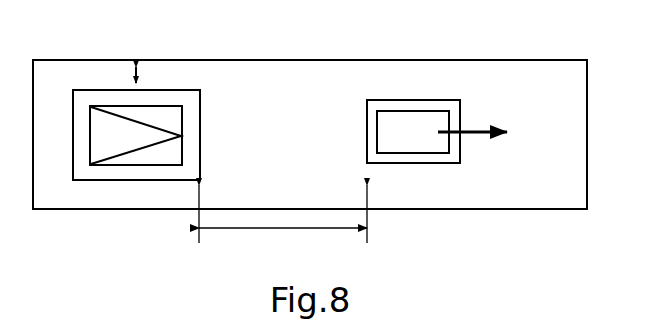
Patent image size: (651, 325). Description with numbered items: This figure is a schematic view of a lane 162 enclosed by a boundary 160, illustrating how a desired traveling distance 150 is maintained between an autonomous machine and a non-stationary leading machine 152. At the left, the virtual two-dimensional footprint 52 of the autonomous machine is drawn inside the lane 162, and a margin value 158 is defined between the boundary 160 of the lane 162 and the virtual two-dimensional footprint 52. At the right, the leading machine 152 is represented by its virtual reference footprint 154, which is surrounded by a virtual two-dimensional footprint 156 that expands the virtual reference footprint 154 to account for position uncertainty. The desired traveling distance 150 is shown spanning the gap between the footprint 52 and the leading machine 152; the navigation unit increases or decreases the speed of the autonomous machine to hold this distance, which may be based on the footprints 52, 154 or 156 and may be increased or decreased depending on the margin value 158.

The virtual two-dimensional footprint 52 is at (102, 90).
The desired traveling distance 150 is at (278, 229).
The non-stationary leading machine 152 is at (474, 92).
The virtual reference footprint 154 is at (390, 100).
The virtual two-dimensional footprint 156 is at (448, 100).
The margin value 158 is at (146, 72).
The boundary 160 is at (250, 60).
The lane 162 is at (322, 80).